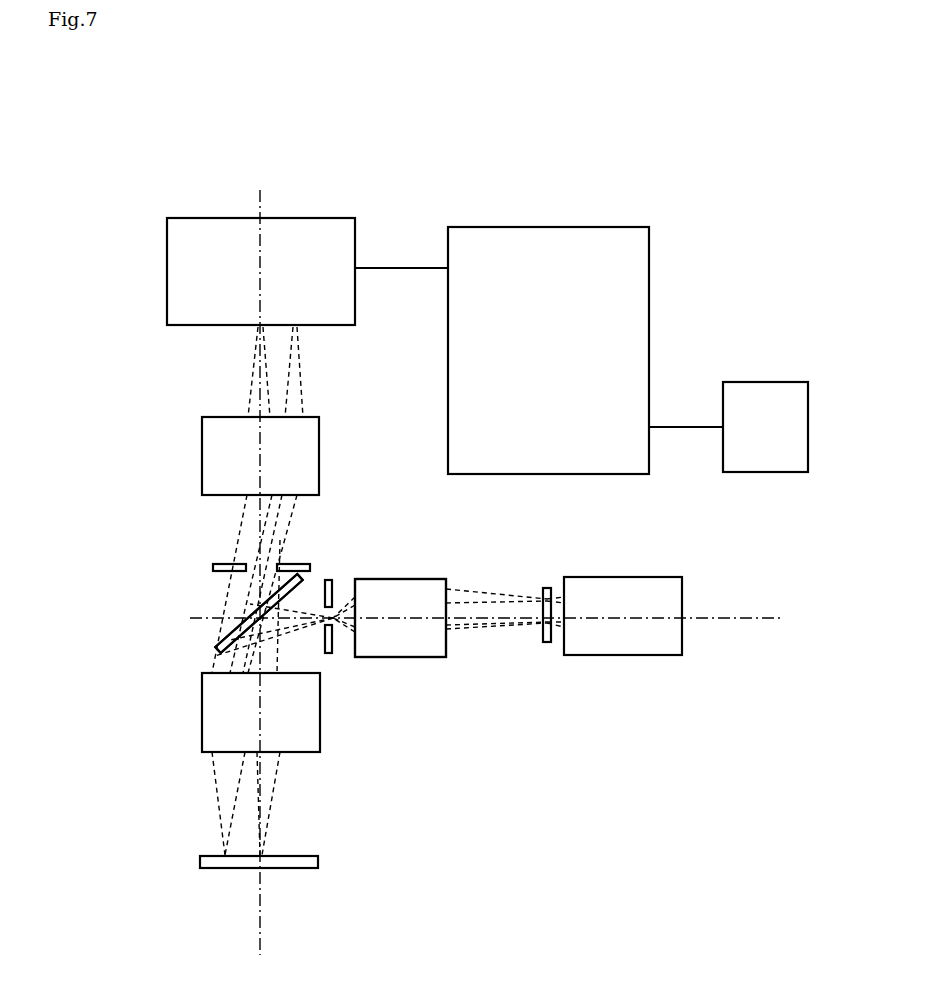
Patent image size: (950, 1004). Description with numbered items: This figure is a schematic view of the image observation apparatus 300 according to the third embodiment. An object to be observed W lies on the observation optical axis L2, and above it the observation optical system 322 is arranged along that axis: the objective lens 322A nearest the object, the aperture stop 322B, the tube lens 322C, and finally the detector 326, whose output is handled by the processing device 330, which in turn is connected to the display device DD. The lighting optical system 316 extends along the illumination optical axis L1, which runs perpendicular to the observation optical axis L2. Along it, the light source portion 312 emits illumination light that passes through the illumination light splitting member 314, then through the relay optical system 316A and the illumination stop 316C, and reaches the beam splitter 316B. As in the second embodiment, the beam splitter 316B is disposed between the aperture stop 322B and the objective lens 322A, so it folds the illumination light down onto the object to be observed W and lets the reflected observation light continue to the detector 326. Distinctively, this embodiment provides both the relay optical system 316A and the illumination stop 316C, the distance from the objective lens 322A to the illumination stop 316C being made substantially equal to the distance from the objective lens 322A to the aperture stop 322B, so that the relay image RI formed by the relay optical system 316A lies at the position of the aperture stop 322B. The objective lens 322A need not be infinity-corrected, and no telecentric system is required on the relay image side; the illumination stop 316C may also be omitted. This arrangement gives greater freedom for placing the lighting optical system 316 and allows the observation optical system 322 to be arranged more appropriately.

The image observation apparatus 300 is at (440, 140).
The light source portion 312 is at (672, 609).
The illumination light splitting member 314 is at (551, 645).
The lighting optical system 316 is at (385, 725).
The relay optical system 316A is at (426, 609).
The beam splitter 316B is at (215, 650).
The illumination stop 316C is at (330, 655).
The observation optical system 322 is at (174, 414).
The objective lens 322A is at (259, 735).
The aperture stop 322B is at (306, 572).
The tube lens 322C is at (259, 455).
The detector 326 is at (236, 263).
The processing device 330 is at (527, 277).
The display device DD is at (782, 413).
The object to be observed W is at (318, 879).
The relay image RI is at (338, 612).
The illumination optical axis L1 is at (485, 632).
The observation optical axis L2 is at (258, 197).